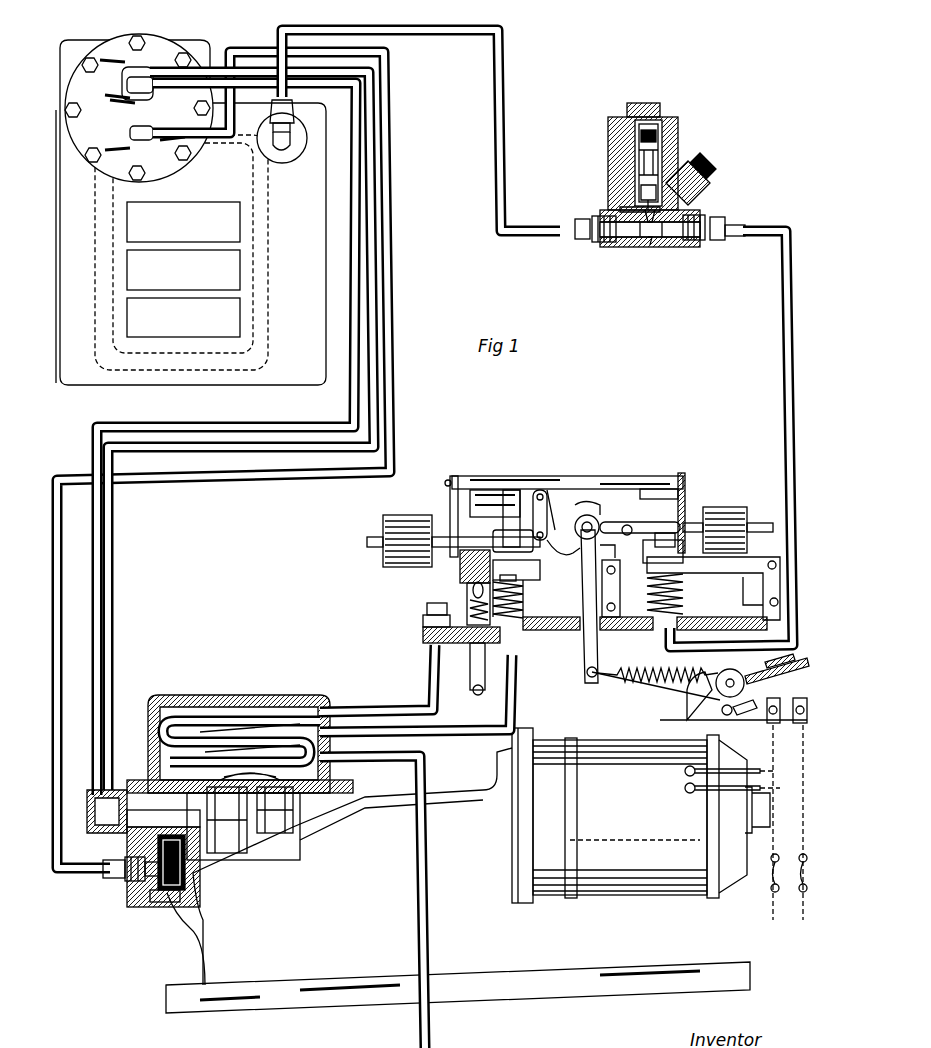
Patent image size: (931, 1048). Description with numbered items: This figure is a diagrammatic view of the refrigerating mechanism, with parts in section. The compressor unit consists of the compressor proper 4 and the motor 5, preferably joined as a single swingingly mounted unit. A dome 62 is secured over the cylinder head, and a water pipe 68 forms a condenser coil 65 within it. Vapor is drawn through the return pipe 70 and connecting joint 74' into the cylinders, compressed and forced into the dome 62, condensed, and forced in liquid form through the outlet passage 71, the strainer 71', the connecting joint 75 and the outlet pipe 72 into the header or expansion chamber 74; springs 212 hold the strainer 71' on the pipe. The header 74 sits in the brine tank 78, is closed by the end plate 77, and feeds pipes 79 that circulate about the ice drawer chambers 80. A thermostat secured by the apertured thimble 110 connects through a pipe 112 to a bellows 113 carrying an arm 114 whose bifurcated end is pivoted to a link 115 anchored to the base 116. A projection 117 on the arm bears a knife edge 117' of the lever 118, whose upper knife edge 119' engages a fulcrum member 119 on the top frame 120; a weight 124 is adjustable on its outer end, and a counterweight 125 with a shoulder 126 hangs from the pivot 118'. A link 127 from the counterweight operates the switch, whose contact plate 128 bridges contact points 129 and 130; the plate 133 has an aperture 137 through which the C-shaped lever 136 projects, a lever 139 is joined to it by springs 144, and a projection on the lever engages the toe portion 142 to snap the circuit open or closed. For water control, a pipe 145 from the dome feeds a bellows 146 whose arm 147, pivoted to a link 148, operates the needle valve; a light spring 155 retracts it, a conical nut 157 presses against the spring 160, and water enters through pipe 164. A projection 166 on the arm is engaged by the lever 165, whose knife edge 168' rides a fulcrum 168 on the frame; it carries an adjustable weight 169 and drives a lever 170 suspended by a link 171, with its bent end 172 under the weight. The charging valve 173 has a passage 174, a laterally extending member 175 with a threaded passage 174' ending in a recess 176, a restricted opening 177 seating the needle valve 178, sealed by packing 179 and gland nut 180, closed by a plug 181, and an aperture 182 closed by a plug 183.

The compressor proper 4 is at (438, 880).
The motor 5 is at (646, 815).
The dome 62 is at (302, 700).
The condenser coil 65 is at (243, 700).
The water pipe 68 is at (430, 690).
The return pipe 70 is at (112, 628).
The outlet passage 71 is at (163, 875).
The strainer 71' is at (144, 903).
The outlet pipe 72 is at (55, 670).
The header or expansion chamber 74 is at (193, 200).
The connecting joint 74' is at (143, 825).
The connecting joint 75 is at (110, 880).
The end plate 77 is at (160, 52).
The refrigerating or brine tank 78 is at (62, 323).
The pipes 79 is at (268, 275).
The ice drawer chambers 80 is at (183, 269).
The apertured thimble 110 is at (286, 163).
The pipe 112 is at (431, 36).
The bellows 113 is at (688, 596).
The arm 114 is at (765, 553).
The link 115 is at (754, 591).
The base 116 is at (710, 624).
The projection 117 is at (651, 560).
The knife edge 117' is at (685, 548).
The lever 118 is at (736, 512).
The pivot 118' is at (640, 519).
The fulcrum member 119 is at (703, 503).
The knife edge 119' is at (703, 467).
The top frame 120 is at (590, 478).
The weight 124 is at (725, 515).
The counterweight 125 is at (590, 515).
The shoulder 126 is at (602, 546).
The link 127 is at (582, 640).
The contact plate 128 is at (790, 675).
The contact point 129 is at (798, 725).
The contact point 130 is at (770, 725).
The plate 133 is at (790, 657).
The C-shaped lever 136 is at (745, 700).
The aperture 137 is at (735, 683).
The lever 139 is at (615, 688).
The toe portion 142 is at (700, 706).
The springs 144 is at (640, 672).
The pipe 145 is at (470, 740).
The bellows 146 is at (520, 598).
The arm 147 is at (568, 576).
The link 148 is at (614, 592).
The light spring 155 is at (426, 619).
The nut 157 is at (466, 593).
The spring 160 is at (462, 570).
The pipe 164 is at (480, 694).
The lever 165 is at (430, 535).
The projection 166 is at (495, 570).
The fulcrum 168 is at (513, 484).
The knife edge 168' is at (489, 481).
The adjustable weight 169 is at (405, 520).
The lever 170 is at (556, 490).
The link 171 is at (540, 492).
The laterally bent free end 172 is at (548, 548).
The charging valve 173 is at (702, 208).
The passage 174 is at (650, 250).
The passage 174' is at (616, 194).
The laterally extending member 175 is at (672, 128).
The recess 176 is at (620, 210).
The auxiliary passage or restricted opening 177 is at (652, 246).
The needle valve 178 is at (665, 150).
The packing 179 is at (660, 165).
The gland nut 180 is at (618, 168).
The screw-threaded plug 181 is at (642, 108).
The aperture 182 is at (707, 192).
The screw-threaded plug 183 is at (710, 172).
The springs 212 is at (170, 905).